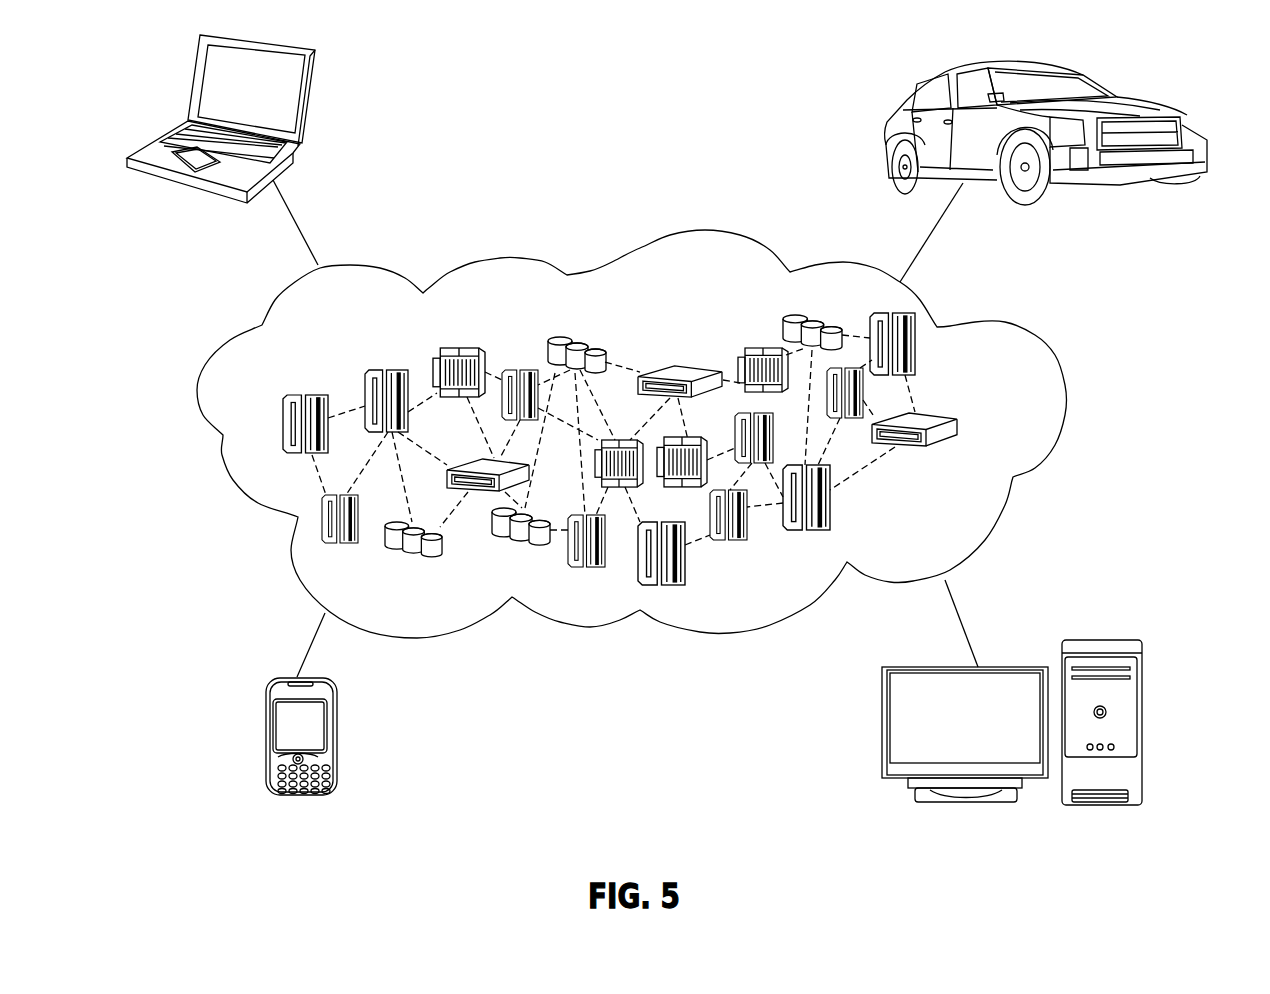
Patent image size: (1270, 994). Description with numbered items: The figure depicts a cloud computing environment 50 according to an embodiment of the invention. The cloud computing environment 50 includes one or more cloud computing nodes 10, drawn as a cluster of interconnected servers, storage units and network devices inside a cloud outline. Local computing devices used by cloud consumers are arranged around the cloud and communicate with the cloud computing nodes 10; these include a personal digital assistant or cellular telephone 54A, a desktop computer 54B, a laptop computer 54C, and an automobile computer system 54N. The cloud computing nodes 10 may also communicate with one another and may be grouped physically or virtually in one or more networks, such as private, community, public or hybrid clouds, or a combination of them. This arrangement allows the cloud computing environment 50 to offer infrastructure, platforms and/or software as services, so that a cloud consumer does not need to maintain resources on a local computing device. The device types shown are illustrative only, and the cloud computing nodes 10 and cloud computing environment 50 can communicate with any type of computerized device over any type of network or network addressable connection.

The cloud computing environment 50 is at (1023, 340).
The cloud computing nodes 10 is at (996, 425).
The personal digital assistant or cellular telephone 54A is at (266, 742).
The desktop computer 54B is at (1108, 640).
The laptop computer 54C is at (307, 107).
The automobile computer system 54N is at (893, 112).